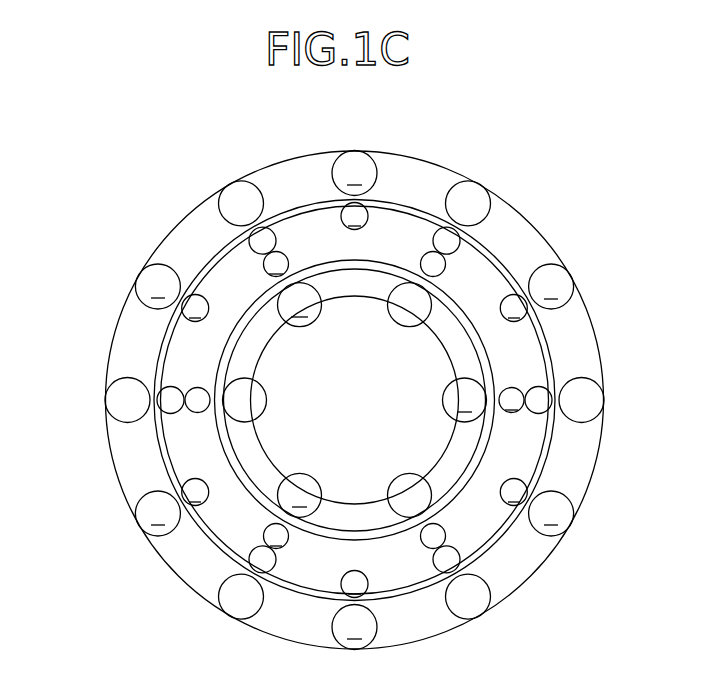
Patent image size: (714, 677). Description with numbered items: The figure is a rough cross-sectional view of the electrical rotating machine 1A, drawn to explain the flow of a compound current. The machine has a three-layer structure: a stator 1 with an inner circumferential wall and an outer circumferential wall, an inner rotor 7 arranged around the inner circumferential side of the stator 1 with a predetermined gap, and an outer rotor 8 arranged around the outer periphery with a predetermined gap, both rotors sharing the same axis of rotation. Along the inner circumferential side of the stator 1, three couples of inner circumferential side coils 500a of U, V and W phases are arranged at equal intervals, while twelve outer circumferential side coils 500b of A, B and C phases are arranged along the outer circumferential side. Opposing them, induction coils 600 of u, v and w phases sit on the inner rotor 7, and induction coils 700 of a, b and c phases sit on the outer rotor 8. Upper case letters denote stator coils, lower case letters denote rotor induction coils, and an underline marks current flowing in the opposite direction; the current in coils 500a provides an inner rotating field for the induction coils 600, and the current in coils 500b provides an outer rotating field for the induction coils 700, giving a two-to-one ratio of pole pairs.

The electrical rotating machine 1A is at (389, 144).
The outer rotor 8 is at (582, 343).
The inner circumferential side coils 500a is at (188, 388).
The outer circumferential side coils 500b is at (158, 389).
The induction coils of outer rotor 700 is at (130, 422).
The stator 1 is at (203, 352).
The induction coils of inner rotor 600 is at (266, 407).
The inner rotor 7 is at (448, 465).